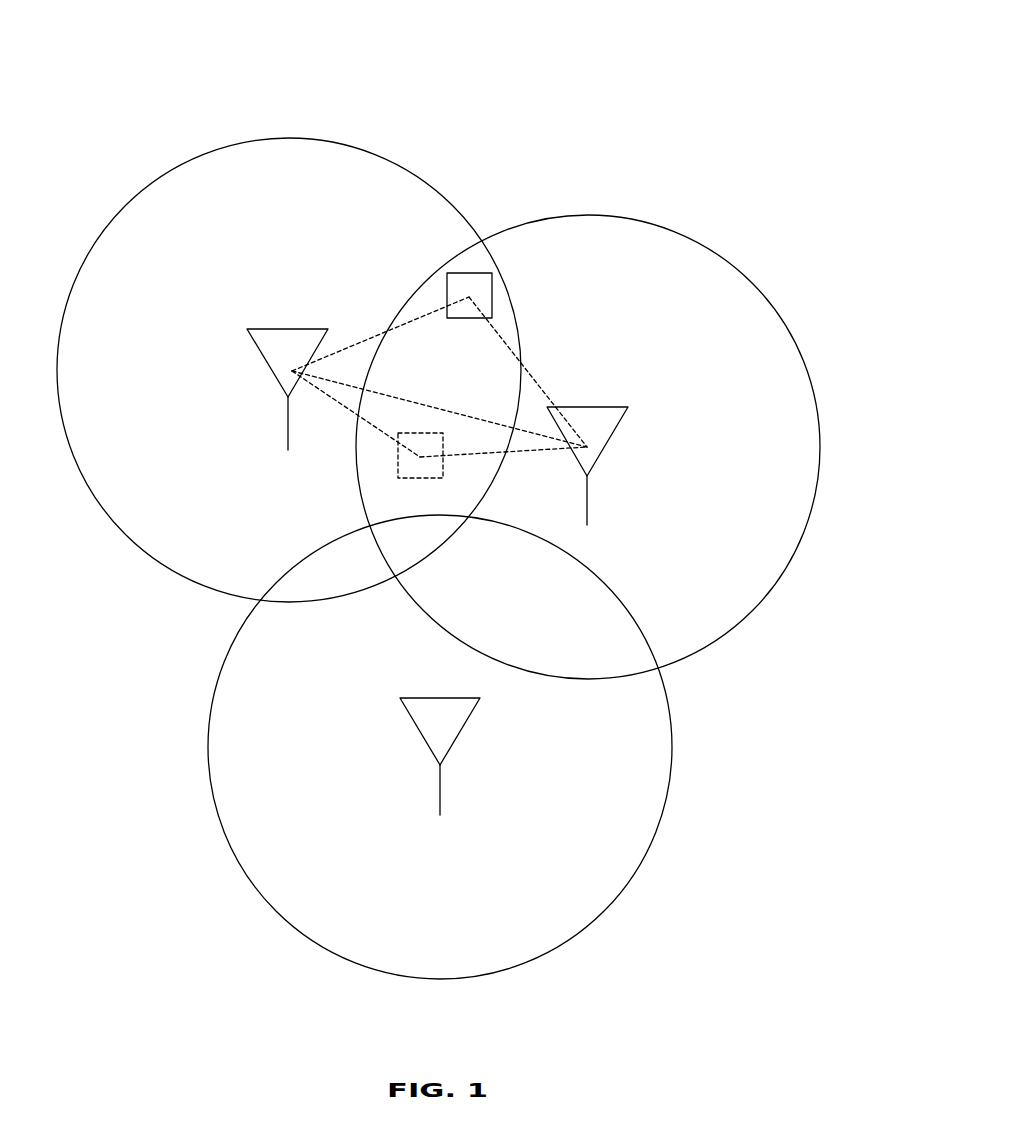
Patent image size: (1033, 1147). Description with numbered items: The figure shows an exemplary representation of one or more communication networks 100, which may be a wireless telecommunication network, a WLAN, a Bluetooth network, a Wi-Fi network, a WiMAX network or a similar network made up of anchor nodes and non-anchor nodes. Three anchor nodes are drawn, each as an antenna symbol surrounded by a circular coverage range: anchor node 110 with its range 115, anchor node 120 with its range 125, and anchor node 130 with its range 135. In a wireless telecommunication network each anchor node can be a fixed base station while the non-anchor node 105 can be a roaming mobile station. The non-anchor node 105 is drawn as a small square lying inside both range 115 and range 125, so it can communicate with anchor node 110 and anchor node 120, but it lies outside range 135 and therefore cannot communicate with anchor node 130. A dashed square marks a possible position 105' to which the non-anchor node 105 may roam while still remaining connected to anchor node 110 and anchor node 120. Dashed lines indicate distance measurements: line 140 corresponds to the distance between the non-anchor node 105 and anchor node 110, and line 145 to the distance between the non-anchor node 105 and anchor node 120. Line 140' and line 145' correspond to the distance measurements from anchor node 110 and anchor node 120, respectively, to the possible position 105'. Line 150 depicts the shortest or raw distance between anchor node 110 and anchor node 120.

The communication networks 100 is at (493, 82).
The non-anchor node 105 is at (496, 276).
The possible position of non-anchor node 105' is at (351, 492).
The anchor node 110 is at (292, 358).
The range of anchor node 115 is at (289, 338).
The anchor node 120 is at (598, 436).
The range of anchor node 125 is at (588, 416).
The anchor node 130 is at (431, 724).
The range of anchor node 135 is at (467, 747).
The line 140 is at (380, 304).
The line 140' is at (340, 431).
The line 145 is at (531, 372).
The line 145' is at (503, 484).
The line 150 is at (439, 395).